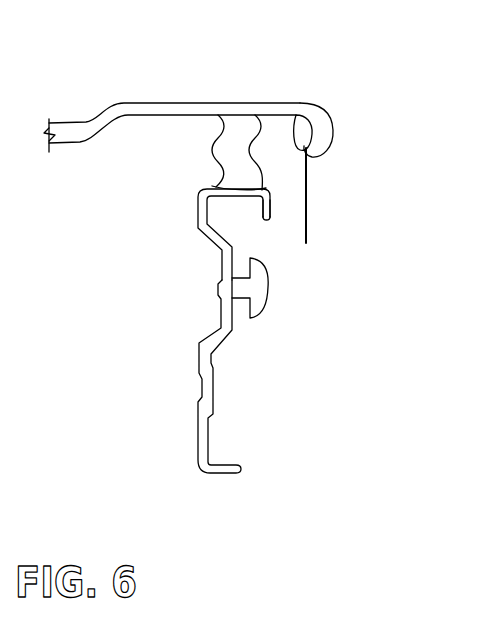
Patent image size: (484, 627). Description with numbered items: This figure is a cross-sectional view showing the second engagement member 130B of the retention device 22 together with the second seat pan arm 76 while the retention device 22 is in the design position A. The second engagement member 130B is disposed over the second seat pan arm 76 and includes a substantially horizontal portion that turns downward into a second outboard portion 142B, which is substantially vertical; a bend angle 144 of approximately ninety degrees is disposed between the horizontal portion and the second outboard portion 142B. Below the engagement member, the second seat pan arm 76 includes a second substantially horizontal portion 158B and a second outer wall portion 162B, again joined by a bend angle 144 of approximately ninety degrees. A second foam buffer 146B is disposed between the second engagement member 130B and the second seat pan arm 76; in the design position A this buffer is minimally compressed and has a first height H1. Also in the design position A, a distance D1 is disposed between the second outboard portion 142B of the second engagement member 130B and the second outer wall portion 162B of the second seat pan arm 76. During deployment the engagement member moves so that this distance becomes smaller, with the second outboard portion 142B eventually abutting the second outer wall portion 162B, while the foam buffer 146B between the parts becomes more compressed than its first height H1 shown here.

The design position A is at (127, 102).
The retention device 22 is at (182, 103).
The second engagement member 130B is at (253, 102).
The second outboard portion 142B is at (338, 132).
The bend angle 144 is at (308, 163).
The second foam buffer 146B is at (240, 157).
The second substantially horizontal portion 158B is at (233, 193).
The second outer wall portion 162B is at (270, 200).
The second seat pan arm 76 is at (240, 210).
The first height H1 is at (175, 115).
The distance D1 is at (237, 233).